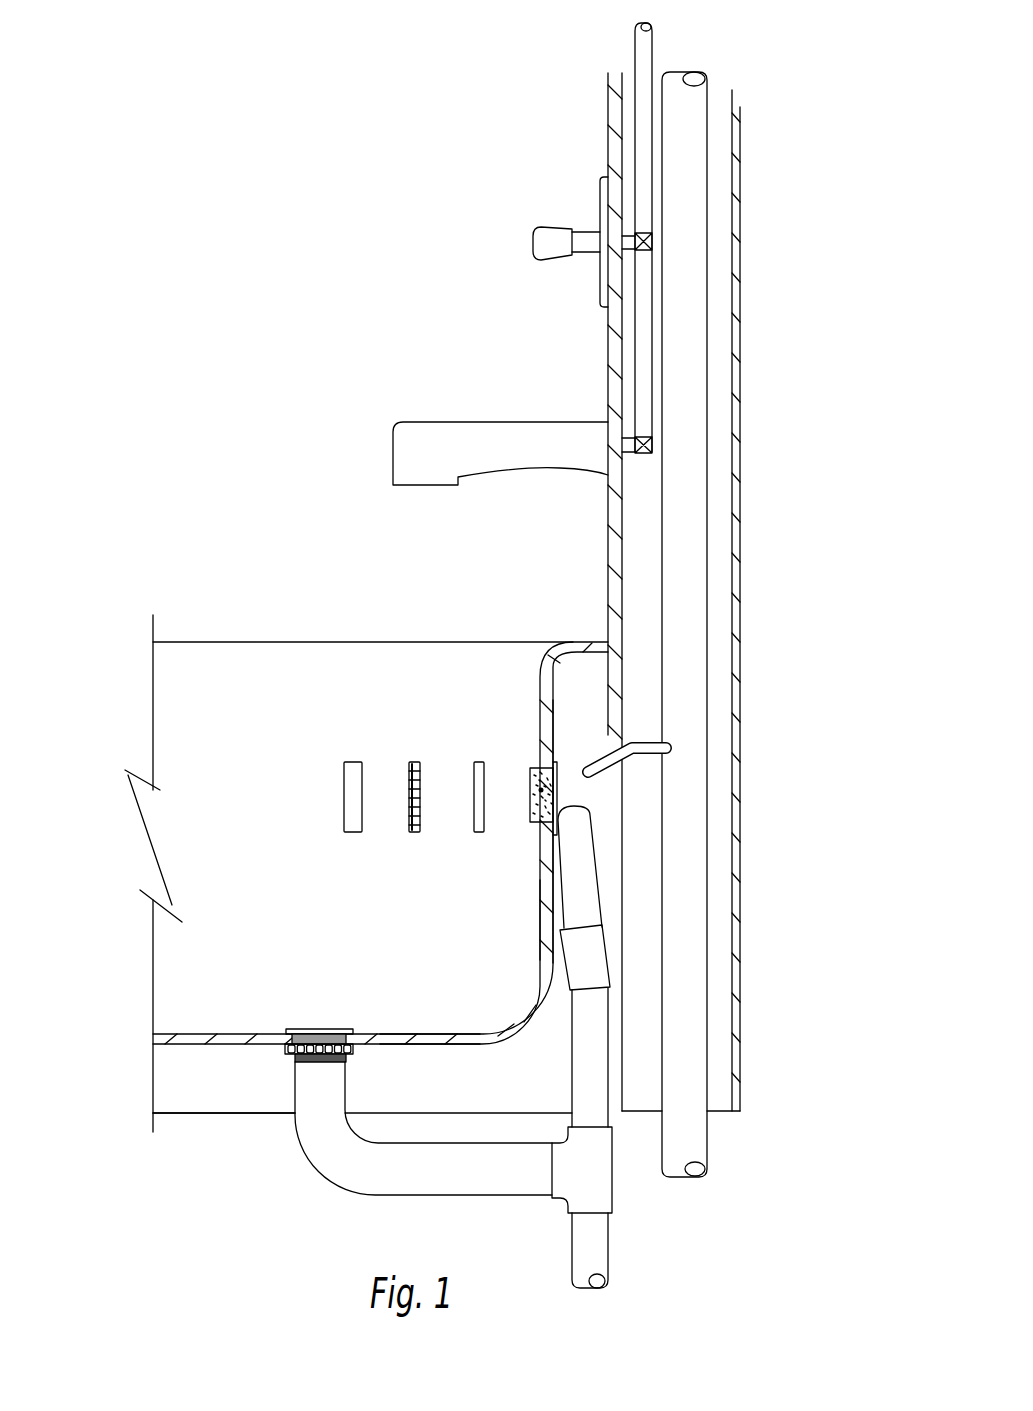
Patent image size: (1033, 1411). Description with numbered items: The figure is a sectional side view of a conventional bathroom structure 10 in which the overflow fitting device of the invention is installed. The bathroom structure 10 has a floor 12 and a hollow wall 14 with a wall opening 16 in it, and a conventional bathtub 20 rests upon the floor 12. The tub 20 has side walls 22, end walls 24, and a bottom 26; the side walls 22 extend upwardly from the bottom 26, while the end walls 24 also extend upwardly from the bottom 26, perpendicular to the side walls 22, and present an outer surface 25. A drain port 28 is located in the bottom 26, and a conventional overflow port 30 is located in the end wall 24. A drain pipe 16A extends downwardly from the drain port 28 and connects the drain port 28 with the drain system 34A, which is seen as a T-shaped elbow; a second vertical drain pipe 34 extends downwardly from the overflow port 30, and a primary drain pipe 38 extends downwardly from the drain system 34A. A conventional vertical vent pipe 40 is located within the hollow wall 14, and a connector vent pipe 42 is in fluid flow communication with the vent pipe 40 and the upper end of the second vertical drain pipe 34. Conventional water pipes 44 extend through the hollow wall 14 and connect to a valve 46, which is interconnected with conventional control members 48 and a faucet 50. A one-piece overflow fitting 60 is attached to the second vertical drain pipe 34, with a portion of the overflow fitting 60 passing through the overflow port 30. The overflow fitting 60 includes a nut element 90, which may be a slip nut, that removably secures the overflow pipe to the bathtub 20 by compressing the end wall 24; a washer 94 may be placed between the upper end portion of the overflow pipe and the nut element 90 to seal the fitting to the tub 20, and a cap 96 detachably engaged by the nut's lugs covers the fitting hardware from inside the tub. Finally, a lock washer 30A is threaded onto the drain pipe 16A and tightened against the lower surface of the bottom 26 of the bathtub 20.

The bathroom structure 10 is at (263, 317).
The floor 12 is at (227, 1112).
The hollow wall 14 is at (741, 563).
The wall opening 16 is at (618, 740).
The drain pipe 16A is at (330, 1178).
The bathtub 20 is at (249, 1112).
The side walls 22 is at (266, 853).
The end walls 24 is at (541, 912).
The outer surface 25 is at (560, 928).
The bottom 26 is at (412, 1033).
The drain port 28 is at (323, 1030).
The overflow port 30 is at (527, 838).
The lock washer 30A is at (349, 1058).
The second vertical drain pipe 34 is at (597, 1045).
The drain system 34A is at (612, 1200).
The primary drain pipe 38 is at (580, 1245).
The vertical vent pipe 40 is at (687, 403).
The connector vent pipe 42 is at (647, 742).
The water pipes 44 is at (637, 50).
The valve 46 is at (652, 243).
The control members 48 is at (550, 232).
The faucet 50 is at (470, 422).
The overflow fitting 60 is at (580, 862).
The nut element 90 is at (414, 761).
The washer 94 is at (478, 761).
The cap 96 is at (352, 761).